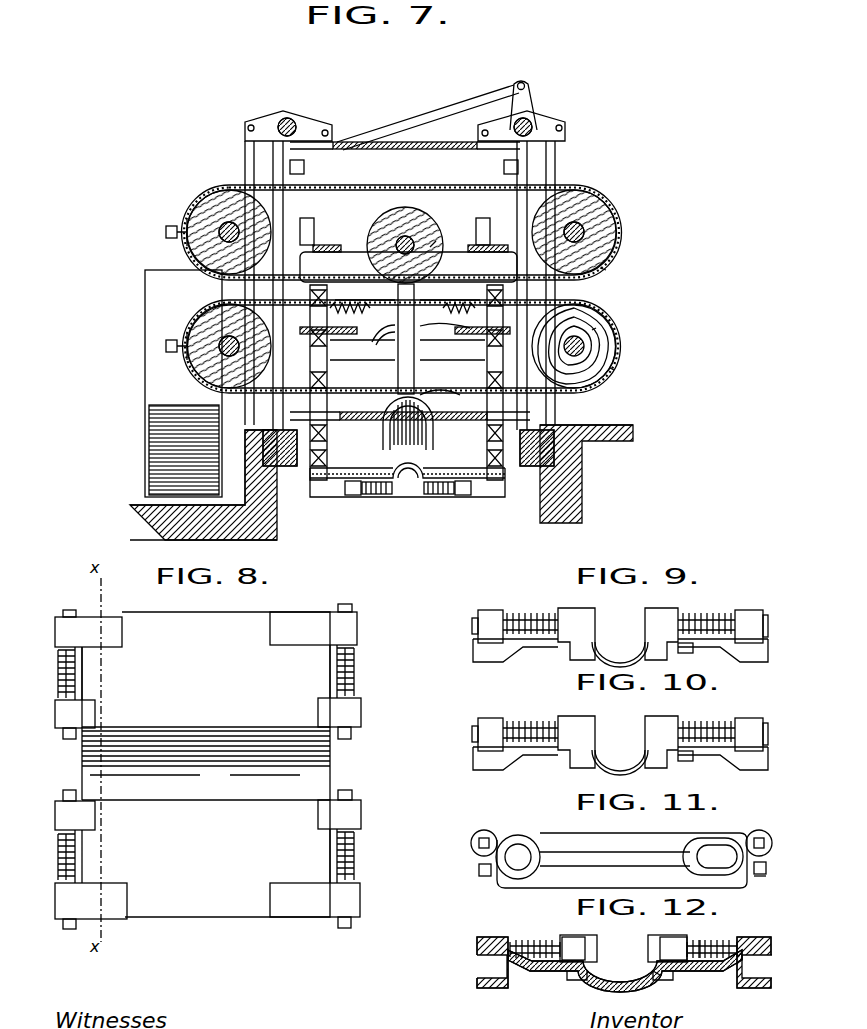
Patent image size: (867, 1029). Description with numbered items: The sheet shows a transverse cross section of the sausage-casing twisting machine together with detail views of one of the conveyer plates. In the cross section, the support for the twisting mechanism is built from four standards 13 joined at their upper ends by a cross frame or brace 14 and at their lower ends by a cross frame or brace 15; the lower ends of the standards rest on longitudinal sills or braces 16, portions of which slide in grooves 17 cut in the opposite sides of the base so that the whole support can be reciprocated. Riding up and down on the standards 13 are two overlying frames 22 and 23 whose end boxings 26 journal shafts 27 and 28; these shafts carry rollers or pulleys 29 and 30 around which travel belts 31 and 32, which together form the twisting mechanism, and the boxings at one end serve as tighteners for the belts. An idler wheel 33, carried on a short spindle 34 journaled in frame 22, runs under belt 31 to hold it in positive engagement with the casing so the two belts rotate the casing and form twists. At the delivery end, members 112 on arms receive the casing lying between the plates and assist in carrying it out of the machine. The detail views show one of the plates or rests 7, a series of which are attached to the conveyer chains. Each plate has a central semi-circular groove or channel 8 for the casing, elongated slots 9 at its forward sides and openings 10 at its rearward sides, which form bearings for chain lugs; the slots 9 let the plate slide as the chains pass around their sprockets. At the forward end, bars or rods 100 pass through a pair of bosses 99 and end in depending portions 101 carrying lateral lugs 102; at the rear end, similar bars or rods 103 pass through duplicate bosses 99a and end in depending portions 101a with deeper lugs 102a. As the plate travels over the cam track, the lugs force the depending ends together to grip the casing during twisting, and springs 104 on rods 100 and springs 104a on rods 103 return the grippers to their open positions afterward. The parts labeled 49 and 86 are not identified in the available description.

In FIG. 7, the plates or rests 7 is at (407, 476).
In FIG. 8, the plates or rests 7 is at (206, 764).
In FIG. 9, the plates or rests 7 is at (620, 654).
In FIG. 10, the plates or rests 7 is at (620, 762).
In FIG. 11, the plates or rests 7 is at (622, 871).
In FIG. 12, the plates or rests 7 is at (625, 974).
In FIG. 8, the grooves or channels 8 is at (222, 790).
In FIG. 11, the elongated slots 9 is at (718, 858).
In FIG. 11, the openings 10 is at (514, 862).
In FIG. 12, the openings 10 is at (490, 968).
In FIG. 7, the standards 13 is at (277, 175).
In FIG. 7, the cross frame or brace 14 is at (340, 142).
In FIG. 7, the cross frame or brace 15 is at (378, 440).
In FIG. 7, the sills or braces 16 is at (290, 468).
In FIG. 7, the grooves 17 is at (562, 446).
In FIG. 7, the frame 22 is at (316, 243).
In FIG. 7, the frame 23 is at (466, 330).
In FIG. 7, the boxings 26 is at (187, 230).
In FIG. 7, the shaft 27 is at (600, 268).
In FIG. 7, the shaft 28 is at (592, 330).
In FIG. 7, the rollers or pulleys 29 is at (210, 256).
In FIG. 7, the rollers or pulleys 30 is at (210, 366).
In FIG. 7, the belt 31 is at (600, 206).
In FIG. 7, the belt 32 is at (610, 368).
In FIG. 7, the idler wheel 33 is at (430, 247).
In FIG. 7, the spindle 34 is at (393, 216).
In FIG. 7, the plate stack 49 is at (160, 409).
In FIG. 7, the support 86 is at (440, 396).
In FIG. 8, the bosses 99 is at (355, 710).
In FIG. 9, the bosses 99 is at (748, 615).
In FIG. 8, the bosses 99a is at (56, 890).
In FIG. 10, the bosses 99a is at (490, 722).
In FIG. 8, the bars or rods 100 is at (362, 594).
In FIG. 9, the bars or rods 100 is at (472, 627).
In FIG. 11, the bars or rods 100 is at (762, 834).
In FIG. 9, the depending portions 101 is at (595, 625).
In FIG. 11, the depending portions 101 is at (760, 878).
In FIG. 10, the depending portions 101a is at (595, 737).
In FIG. 12, the depending portions 101a is at (597, 958).
In FIG. 9, the lugs 102 is at (683, 650).
In FIG. 11, the lugs 102 is at (767, 866).
In FIG. 10, the lugs 102a is at (740, 757).
In FIG. 11, the lugs 102a is at (478, 870).
In FIG. 12, the lugs 102a is at (660, 975).
In FIG. 8, the bars or rods 103 is at (72, 596).
In FIG. 10, the bars or rods 103 is at (472, 735).
In FIG. 11, the bars or rods 103 is at (478, 836).
In FIG. 12, the bars or rods 103 is at (708, 942).
In FIG. 8, the springs 104 is at (338, 680).
In FIG. 9, the springs 104 is at (548, 596).
In FIG. 8, the springs 104a is at (76, 678).
In FIG. 10, the springs 104a is at (548, 710).
In FIG. 12, the springs 104a is at (555, 934).
In FIG. 7, the members 112 is at (382, 330).